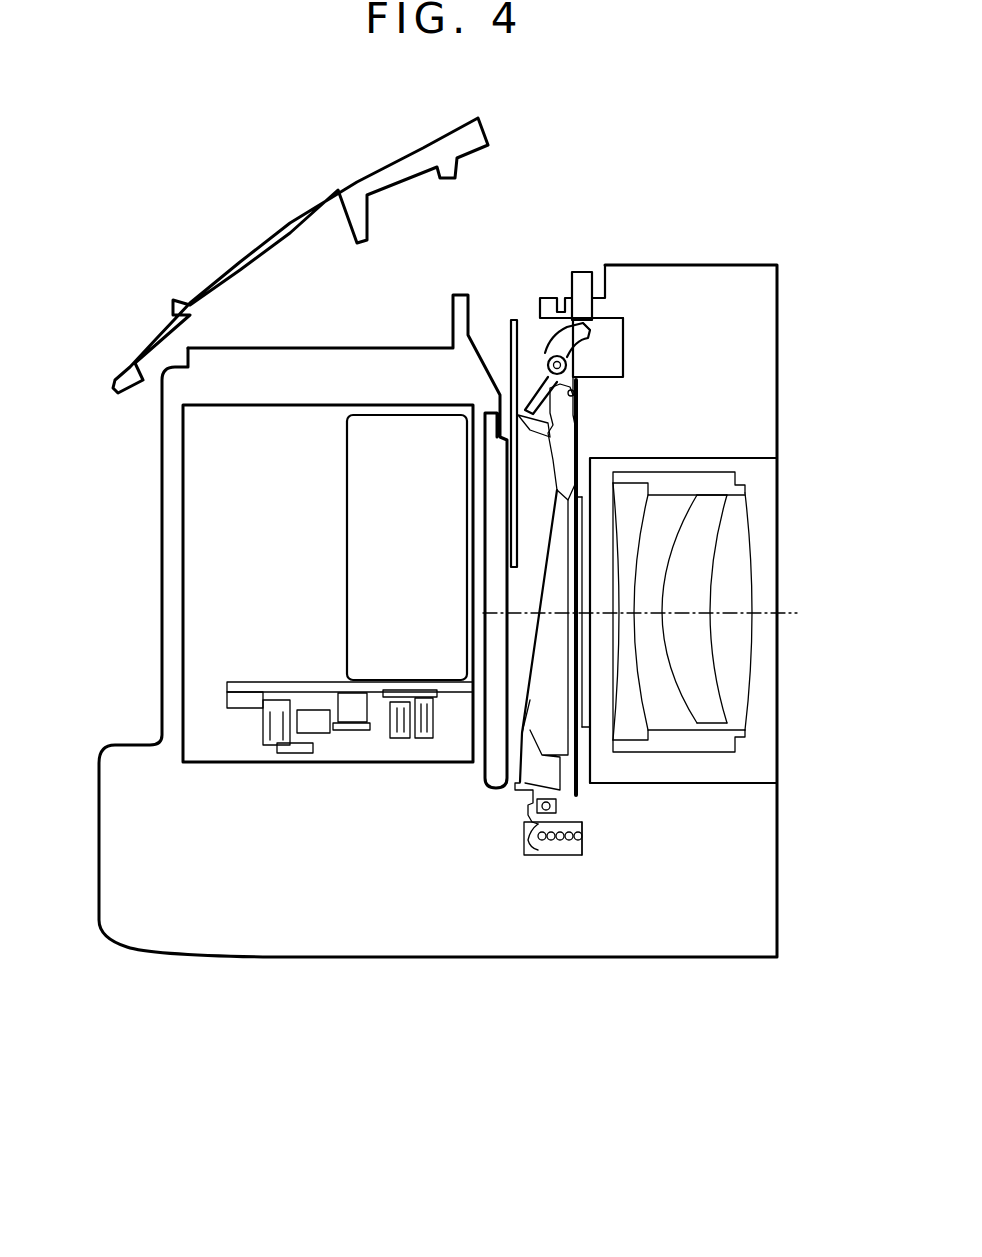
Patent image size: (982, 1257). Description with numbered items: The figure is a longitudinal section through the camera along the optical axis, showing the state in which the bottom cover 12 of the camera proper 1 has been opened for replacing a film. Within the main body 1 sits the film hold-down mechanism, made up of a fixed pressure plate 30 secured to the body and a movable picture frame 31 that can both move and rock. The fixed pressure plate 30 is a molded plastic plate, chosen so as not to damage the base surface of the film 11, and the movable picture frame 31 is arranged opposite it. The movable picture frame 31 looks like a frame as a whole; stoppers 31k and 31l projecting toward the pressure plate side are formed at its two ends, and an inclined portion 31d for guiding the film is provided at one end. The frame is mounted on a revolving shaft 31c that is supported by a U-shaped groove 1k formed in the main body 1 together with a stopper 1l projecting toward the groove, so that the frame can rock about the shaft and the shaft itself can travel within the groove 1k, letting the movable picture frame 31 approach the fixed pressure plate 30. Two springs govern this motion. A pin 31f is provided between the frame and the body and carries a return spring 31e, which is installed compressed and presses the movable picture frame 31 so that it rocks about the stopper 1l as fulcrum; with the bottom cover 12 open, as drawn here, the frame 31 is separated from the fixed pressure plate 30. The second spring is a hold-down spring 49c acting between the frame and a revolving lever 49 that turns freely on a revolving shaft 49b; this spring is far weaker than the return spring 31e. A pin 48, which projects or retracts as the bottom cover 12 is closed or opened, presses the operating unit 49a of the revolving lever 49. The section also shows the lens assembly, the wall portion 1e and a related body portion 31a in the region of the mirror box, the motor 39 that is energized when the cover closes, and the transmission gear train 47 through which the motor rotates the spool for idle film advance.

The camera proper 1 is at (768, 874).
The body wall portion 1e is at (584, 823).
The U-shaped groove 1k is at (593, 795).
The stopper 1l is at (518, 795).
The film 11 is at (522, 490).
The bottom cover 12 is at (414, 160).
The fixed pressure plate 30 is at (485, 790).
The movable picture frame 31 is at (535, 705).
The mirror 31a is at (528, 698).
The revolving shaft 31c is at (530, 815).
The inclined portion 31d is at (582, 407).
The return spring 31e is at (560, 856).
The pin 31f is at (540, 822).
The stopper 31k is at (510, 792).
The stopper 31l is at (553, 427).
The motor 39 is at (353, 510).
The transmission gear train 47 is at (248, 700).
The pin 48 is at (580, 272).
The revolving lever 49 is at (547, 353).
The operating unit 49a is at (577, 352).
The revolving shaft 49b is at (578, 362).
The hold-down spring 49c is at (582, 388).